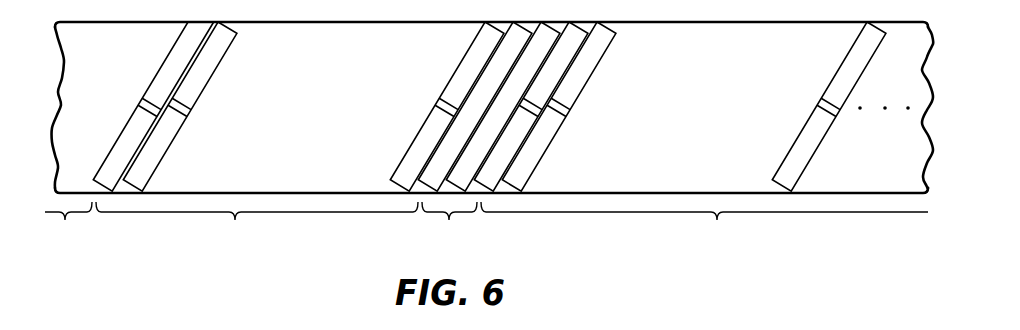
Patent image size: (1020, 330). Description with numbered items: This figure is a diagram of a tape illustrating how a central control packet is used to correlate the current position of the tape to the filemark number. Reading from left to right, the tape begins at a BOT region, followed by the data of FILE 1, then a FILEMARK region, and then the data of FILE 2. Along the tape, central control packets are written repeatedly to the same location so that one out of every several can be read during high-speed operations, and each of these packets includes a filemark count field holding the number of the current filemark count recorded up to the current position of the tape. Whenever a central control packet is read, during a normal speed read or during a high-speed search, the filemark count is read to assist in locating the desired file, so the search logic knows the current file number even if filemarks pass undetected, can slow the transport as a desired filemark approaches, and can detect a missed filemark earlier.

The beginning of tape BOT is at (72, 173).
The file 1 region FILE 1 is at (257, 226).
The filemark region FILEMARK is at (448, 226).
The file 2 region FILE 2 is at (704, 226).